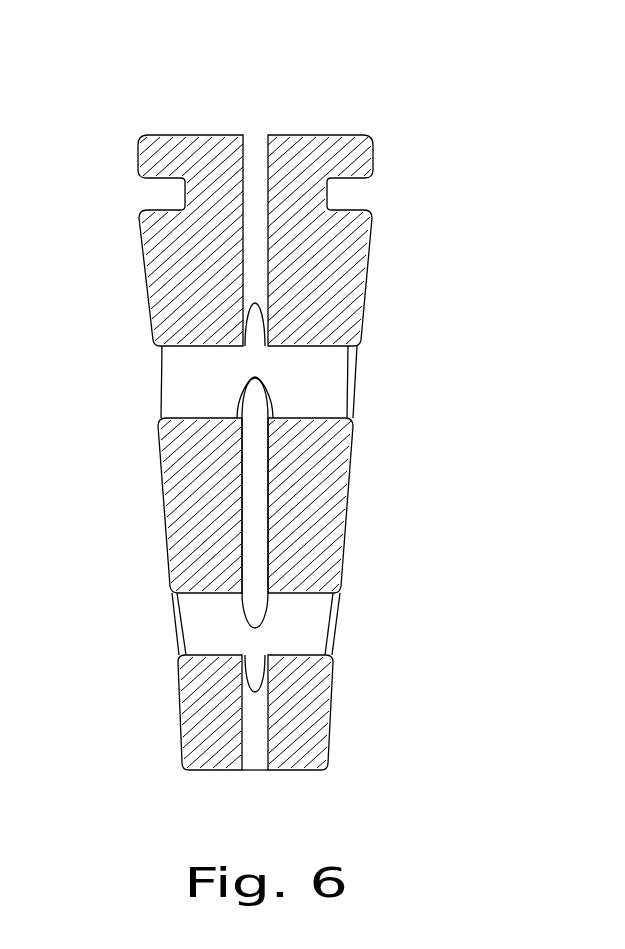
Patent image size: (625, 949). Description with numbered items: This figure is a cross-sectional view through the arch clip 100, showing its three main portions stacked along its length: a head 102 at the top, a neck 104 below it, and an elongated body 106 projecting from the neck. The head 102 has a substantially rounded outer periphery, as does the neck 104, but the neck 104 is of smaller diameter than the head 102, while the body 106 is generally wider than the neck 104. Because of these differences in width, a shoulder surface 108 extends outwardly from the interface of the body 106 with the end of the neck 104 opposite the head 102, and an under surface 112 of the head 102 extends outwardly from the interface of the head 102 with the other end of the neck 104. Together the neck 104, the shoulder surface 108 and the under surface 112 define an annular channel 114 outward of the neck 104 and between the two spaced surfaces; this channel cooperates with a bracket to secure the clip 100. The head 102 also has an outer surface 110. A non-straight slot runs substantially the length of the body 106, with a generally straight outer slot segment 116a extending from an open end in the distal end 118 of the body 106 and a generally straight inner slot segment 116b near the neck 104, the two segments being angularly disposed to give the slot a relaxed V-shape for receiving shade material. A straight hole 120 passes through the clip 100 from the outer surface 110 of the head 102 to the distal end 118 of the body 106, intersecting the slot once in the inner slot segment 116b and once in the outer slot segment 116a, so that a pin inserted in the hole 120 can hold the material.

The arch clip 100 is at (130, 88).
The head 102 is at (361, 150).
The neck 104 is at (307, 203).
The body 106 is at (353, 263).
The shoulder surface 108 is at (160, 200).
The outer surface 110 is at (180, 135).
The under surface 112 is at (165, 190).
The annular channel 114 is at (358, 195).
The outer slot segment 116a is at (258, 682).
The inner slot segment 116b is at (257, 318).
The distal end 118 is at (287, 770).
The straight hole 120 is at (256, 150).